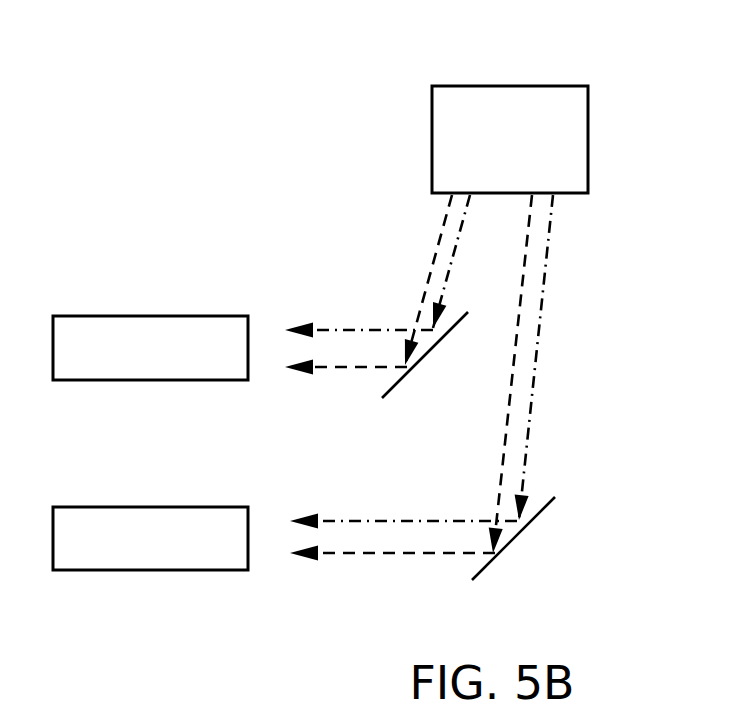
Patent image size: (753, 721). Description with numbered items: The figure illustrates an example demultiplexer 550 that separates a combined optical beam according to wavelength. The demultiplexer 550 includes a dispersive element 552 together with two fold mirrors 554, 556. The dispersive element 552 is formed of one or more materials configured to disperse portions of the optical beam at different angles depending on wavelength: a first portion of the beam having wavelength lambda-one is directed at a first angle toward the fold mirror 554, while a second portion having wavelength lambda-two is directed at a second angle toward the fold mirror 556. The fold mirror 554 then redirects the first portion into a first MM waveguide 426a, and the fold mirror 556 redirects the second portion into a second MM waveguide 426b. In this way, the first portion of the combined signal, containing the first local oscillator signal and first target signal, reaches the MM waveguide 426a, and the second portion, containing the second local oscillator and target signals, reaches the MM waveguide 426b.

The demultiplexer 550 is at (117, 77).
The dispersive element 552 is at (510, 139).
The first MM waveguide 426a is at (150, 348).
The second MM waveguide 426b is at (150, 538).
The fold mirror 554 is at (380, 402).
The fold mirror 556 is at (552, 505).